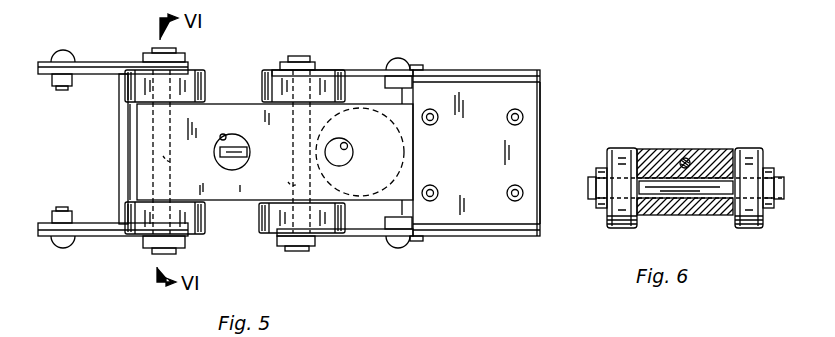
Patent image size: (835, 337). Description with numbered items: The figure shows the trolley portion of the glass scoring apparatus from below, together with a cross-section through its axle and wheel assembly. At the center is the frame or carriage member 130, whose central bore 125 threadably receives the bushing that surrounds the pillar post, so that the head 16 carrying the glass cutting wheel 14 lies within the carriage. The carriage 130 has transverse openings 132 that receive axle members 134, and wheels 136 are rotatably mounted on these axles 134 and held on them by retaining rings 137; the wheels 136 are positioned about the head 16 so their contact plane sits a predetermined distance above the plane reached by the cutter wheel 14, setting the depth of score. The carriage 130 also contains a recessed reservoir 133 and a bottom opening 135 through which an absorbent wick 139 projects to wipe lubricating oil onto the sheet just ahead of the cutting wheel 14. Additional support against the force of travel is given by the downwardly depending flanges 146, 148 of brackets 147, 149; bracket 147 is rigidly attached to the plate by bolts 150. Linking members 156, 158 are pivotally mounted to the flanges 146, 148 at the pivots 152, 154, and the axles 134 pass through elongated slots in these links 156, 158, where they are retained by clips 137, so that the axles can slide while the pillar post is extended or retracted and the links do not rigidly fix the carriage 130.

In FIG. 5, the glass cutting blade or wheel 14 is at (247, 156).
In FIG. 5, the head 16 is at (250, 146).
In FIG. 5, the central bore 125 is at (225, 134).
In FIG. 5, the frame or carriage member 130 is at (415, 104).
In FIG. 6, the frame or carriage member 130 is at (642, 156).
In FIG. 5, the transverse openings 132 is at (170, 162).
In FIG. 6, the transverse openings 132 is at (695, 178).
In FIG. 5, the recessed area or reservoir 133 is at (405, 147).
In FIG. 5, the axle members 134 is at (302, 246).
In FIG. 6, the axle members 134 is at (660, 205).
In FIG. 5, the bottom opening 135 is at (360, 133).
In FIG. 5, the wheels 136 is at (262, 100).
In FIG. 6, the wheels 136 is at (614, 224).
In FIG. 5, the retaining rings 137 is at (282, 60).
In FIG. 6, the retaining rings 137 is at (594, 192).
In FIG. 5, the wick 139 is at (346, 160).
In FIG. 5, the downwardly depending flange 146 is at (514, 70).
In FIG. 5, the bracket 147 is at (540, 157).
In FIG. 5, the downwardly depending flange 148 is at (84, 88).
In FIG. 5, the bracket 149 is at (120, 168).
In FIG. 5, the bolts 150 is at (522, 113).
In FIG. 5, the pivotal mounting 152 is at (62, 54).
In FIG. 5, the pivotal mounting 154 is at (400, 248).
In FIG. 5, the linking member 156 is at (106, 62).
In FIG. 6, the linking member 156 is at (602, 168).
In FIG. 5, the linking member 158 is at (386, 70).